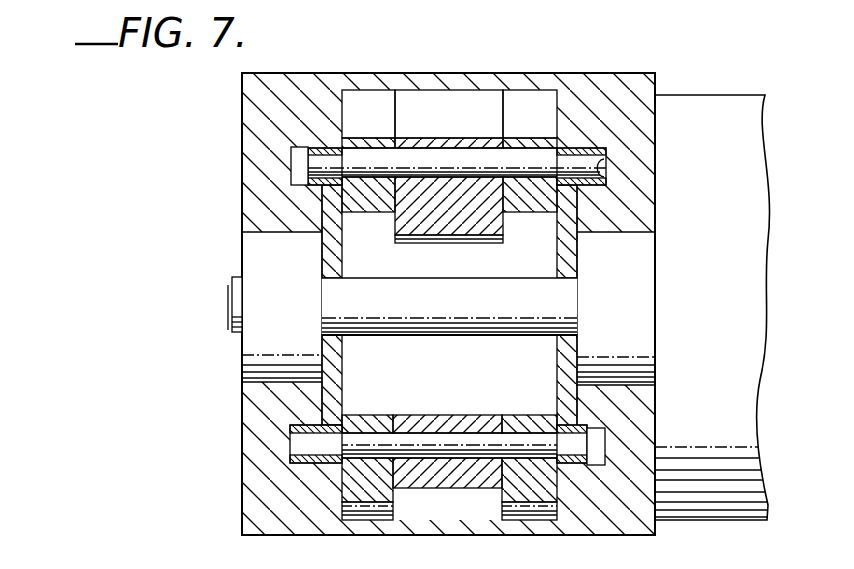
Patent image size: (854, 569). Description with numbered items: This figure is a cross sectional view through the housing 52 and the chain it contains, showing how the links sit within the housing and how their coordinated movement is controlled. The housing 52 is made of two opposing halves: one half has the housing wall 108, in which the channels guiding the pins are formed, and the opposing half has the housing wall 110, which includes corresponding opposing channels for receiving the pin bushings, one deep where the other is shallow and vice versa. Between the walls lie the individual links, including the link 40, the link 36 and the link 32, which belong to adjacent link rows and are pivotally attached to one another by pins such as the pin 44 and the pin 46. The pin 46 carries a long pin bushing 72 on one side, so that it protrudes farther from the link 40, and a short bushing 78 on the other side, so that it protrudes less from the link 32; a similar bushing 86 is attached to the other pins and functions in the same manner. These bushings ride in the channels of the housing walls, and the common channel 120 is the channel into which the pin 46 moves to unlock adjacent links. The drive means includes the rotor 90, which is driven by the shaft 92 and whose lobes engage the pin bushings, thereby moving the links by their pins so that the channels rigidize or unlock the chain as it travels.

The housing 52 is at (604, 72).
The housing wall 110 is at (242, 100).
The housing wall 108 is at (657, 112).
The link 40 is at (358, 136).
The link 36 is at (436, 132).
The link 32 is at (540, 142).
The pin 44 is at (470, 172).
The rotor 90 is at (321, 203).
The common channel 120 is at (657, 170).
The bushing 86 is at (657, 147).
The shaft 92 is at (444, 332).
The pin 46 is at (468, 434).
The long pin bushing 72 is at (312, 465).
The short bushing 78 is at (574, 463).